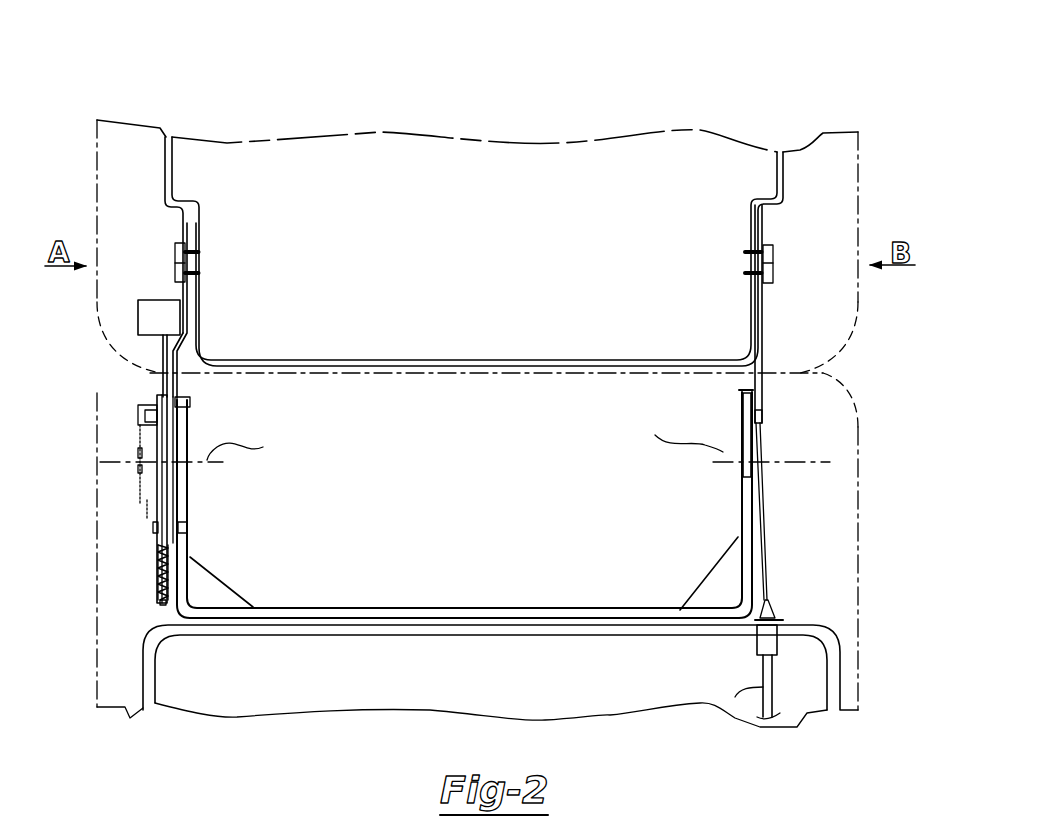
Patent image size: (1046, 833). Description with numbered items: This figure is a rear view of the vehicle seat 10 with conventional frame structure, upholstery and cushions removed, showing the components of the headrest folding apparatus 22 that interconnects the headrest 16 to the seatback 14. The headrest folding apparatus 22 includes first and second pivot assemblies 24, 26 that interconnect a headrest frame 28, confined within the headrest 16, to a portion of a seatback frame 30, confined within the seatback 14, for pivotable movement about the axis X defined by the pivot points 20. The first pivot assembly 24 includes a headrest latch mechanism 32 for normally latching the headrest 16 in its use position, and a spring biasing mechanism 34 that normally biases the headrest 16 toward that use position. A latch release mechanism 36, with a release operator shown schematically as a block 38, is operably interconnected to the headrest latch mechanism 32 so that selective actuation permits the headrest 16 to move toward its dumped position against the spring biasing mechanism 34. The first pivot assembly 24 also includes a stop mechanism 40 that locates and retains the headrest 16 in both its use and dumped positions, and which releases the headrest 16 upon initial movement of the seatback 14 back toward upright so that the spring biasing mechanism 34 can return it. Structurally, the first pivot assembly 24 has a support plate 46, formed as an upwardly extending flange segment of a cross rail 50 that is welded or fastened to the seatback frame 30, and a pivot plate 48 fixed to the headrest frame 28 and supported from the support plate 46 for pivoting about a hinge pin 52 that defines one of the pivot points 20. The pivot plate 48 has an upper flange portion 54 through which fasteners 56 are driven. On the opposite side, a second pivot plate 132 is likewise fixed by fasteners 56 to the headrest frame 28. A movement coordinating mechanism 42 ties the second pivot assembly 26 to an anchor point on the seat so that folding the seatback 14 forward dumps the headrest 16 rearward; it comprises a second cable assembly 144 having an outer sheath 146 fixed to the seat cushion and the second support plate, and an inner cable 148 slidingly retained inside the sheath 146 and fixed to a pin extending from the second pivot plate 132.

The dishwasher 10 is at (708, 102).
The headrest 16 is at (120, 150).
The seatback 14 is at (116, 416).
The pivot points 20 is at (133, 449).
The headrest folding apparatus 22 is at (527, 432).
The first pivot assembly 24 is at (270, 463).
The second pivot assembly 26 is at (711, 515).
The headrest frame 28 is at (447, 360).
The seatback frame 30 is at (482, 636).
The headrest latch mechanism 32 is at (146, 594).
The spring biasing mechanism 34 is at (138, 510).
The latch release mechanism 36 is at (154, 350).
The release operator 38 is at (158, 318).
The stop mechanism 40 is at (146, 539).
The movement coordinating mechanism 42 is at (771, 507).
The support plate 46 is at (183, 550).
The pivot plate 48 is at (193, 362).
The cross rail 50 is at (520, 612).
The hinge pin 52 is at (137, 475).
The upper flange portion 54 is at (188, 250).
The fasteners 56 is at (188, 272).
The second pivot plate 132 is at (810, 332).
The second cable assembly 144 is at (743, 665).
The outer sheath 146 is at (765, 718).
The inner cable 148 is at (765, 573).